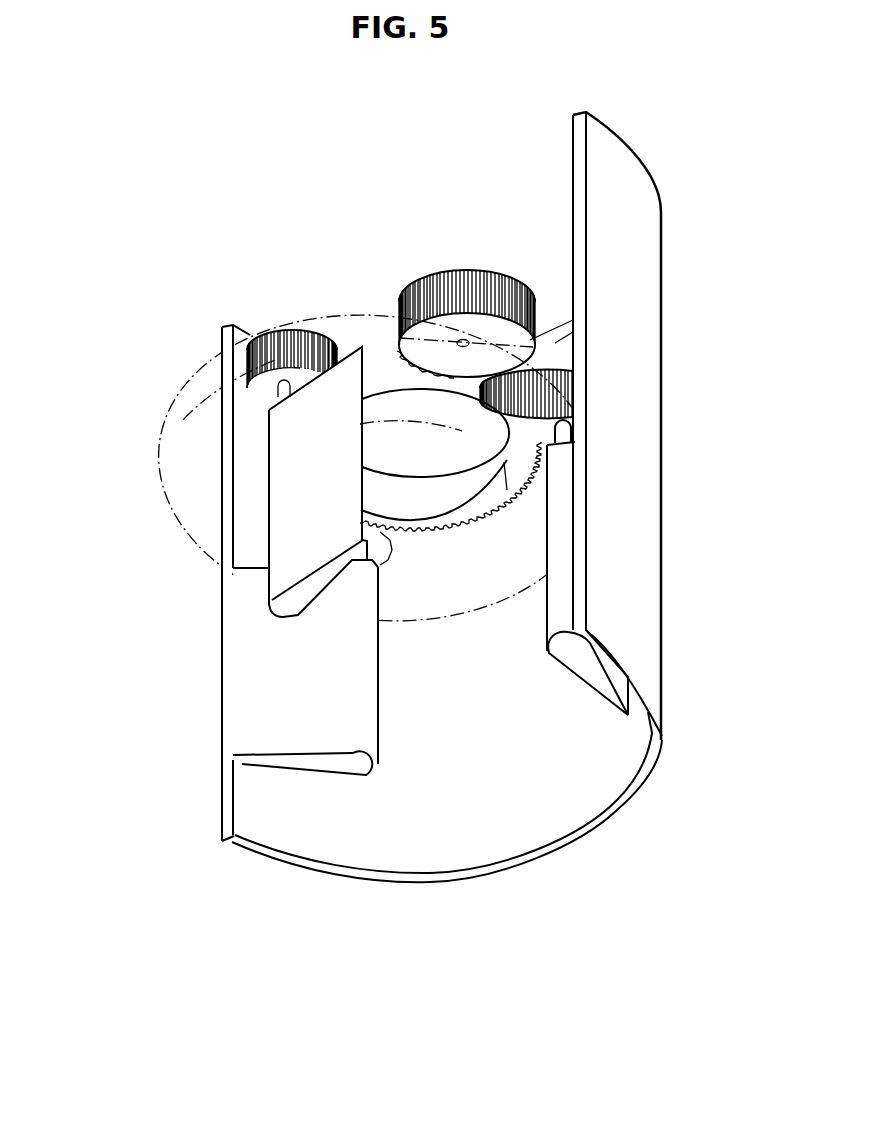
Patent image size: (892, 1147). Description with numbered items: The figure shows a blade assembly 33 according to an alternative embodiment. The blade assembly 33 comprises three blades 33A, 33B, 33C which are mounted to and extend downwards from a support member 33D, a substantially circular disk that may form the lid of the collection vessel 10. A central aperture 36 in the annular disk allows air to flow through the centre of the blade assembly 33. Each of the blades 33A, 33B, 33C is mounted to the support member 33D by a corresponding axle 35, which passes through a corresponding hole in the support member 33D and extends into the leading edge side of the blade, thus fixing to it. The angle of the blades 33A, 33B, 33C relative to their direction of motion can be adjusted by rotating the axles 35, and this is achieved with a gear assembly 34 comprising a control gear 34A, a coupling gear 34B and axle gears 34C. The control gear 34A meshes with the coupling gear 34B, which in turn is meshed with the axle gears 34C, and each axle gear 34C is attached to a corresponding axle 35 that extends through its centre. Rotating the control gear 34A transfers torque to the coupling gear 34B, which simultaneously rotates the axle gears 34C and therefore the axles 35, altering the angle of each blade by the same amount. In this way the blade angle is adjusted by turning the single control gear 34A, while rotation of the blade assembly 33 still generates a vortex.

The collection vessel 10 is at (648, 495).
The blade assembly 33 is at (284, 800).
The blade 33A is at (567, 600).
The blade 33B is at (343, 767).
The blade 33C is at (277, 585).
The support member 33D is at (343, 317).
The gear assembly 34 is at (433, 252).
The control gear 34A is at (487, 265).
The coupling gear 34B is at (369, 340).
The axle gear 34C is at (261, 328).
The axle 35 is at (560, 437).
The central aperture 36 is at (397, 397).